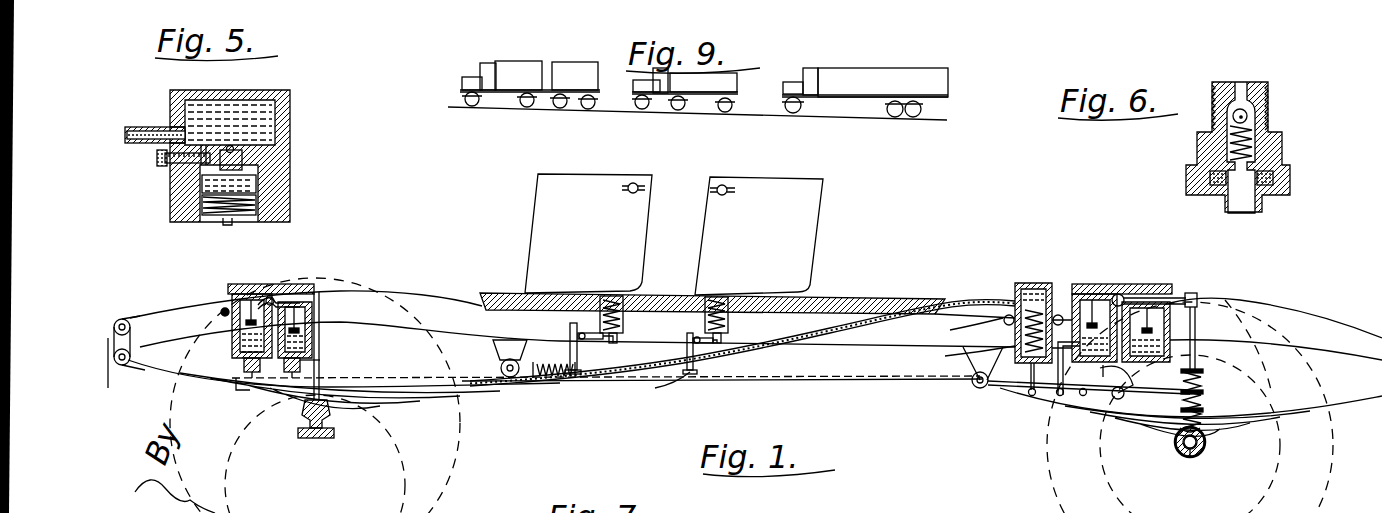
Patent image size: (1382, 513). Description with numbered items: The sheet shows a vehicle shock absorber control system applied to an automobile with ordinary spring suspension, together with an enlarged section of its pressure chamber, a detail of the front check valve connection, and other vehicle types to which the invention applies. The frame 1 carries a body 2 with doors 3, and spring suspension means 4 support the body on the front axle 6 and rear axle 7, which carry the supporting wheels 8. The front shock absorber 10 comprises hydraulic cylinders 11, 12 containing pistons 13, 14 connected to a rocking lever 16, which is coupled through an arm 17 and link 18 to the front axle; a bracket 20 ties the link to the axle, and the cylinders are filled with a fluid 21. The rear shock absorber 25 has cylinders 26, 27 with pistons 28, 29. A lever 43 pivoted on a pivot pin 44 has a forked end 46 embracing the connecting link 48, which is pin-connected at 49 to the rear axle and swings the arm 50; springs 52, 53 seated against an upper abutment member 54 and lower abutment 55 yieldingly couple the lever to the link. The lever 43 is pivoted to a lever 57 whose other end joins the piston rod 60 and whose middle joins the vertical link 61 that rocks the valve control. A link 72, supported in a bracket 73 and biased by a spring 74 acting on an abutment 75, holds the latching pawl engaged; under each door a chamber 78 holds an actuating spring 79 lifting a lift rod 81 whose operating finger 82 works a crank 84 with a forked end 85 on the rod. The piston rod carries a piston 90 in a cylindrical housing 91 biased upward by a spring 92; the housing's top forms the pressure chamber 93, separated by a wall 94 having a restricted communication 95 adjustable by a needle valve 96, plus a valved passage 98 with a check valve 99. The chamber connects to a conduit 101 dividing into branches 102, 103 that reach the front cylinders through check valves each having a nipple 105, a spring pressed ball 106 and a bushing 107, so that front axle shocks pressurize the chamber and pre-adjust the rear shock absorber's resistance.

In FIG. 1, the frame 1 is at (432, 295).
In FIG. 1, the body 2 is at (502, 293).
In FIG. 1, the doors 3 is at (540, 205).
In FIG. 1, the spring suspension means 4 is at (268, 405).
In FIG. 1, the front axle 6 is at (320, 432).
In FIG. 1, the rear axle 7 is at (1180, 452).
In FIG. 1, the supporting wheels 8 is at (466, 442).
In FIG. 1, the front shock absorber 10 is at (277, 364).
In FIG. 1, the hydraulic cylinder 11 is at (235, 336).
In FIG. 1, the hydraulic cylinder 12 is at (298, 318).
In FIG. 1, the piston 13 is at (222, 311).
In FIG. 1, the piston 14 is at (322, 298).
In FIG. 1, the rocking lever 16 is at (262, 284).
In FIG. 1, the arm 17 is at (305, 292).
In FIG. 1, the link 18 is at (322, 352).
In FIG. 1, the bracket 20 is at (330, 418).
In FIG. 1, the fluid 21 is at (242, 293).
In FIG. 1, the rear shock absorber 25 is at (1132, 300).
In FIG. 1, the cylinder 26 is at (1078, 365).
In FIG. 1, the cylinder 27 is at (1143, 395).
In FIG. 1, the piston 28 is at (1083, 290).
In FIG. 1, the piston 29 is at (1150, 310).
In FIG. 1, the lever 43 is at (1162, 392).
In FIG. 1, the pivot pin 44 is at (1133, 385).
In FIG. 1, the forked end 46 is at (1202, 392).
In FIG. 1, the connecting link 48 is at (1196, 332).
In FIG. 1, the pin connection 49 is at (1190, 458).
In FIG. 1, the arm 50 is at (1189, 293).
In FIG. 1, the spring 52 is at (1201, 380).
In FIG. 1, the spring 53 is at (1202, 410).
In FIG. 1, the upper abutment member 54 is at (1200, 368).
In FIG. 1, the lower abutment 55 is at (1200, 430).
In FIG. 1, the lever 57 is at (1062, 396).
In FIG. 1, the piston rod 60 is at (1010, 372).
In FIG. 1, the link 61 is at (1040, 396).
In FIG. 1, the link 72 is at (828, 380).
In FIG. 1, the bracket 73 is at (572, 376).
In FIG. 1, the spring 74 is at (560, 382).
In FIG. 1, the abutment 75 is at (553, 378).
In FIG. 1, the chamber 78 is at (703, 322).
In FIG. 1, the actuating spring 79 is at (705, 300).
In FIG. 1, the lift rod 81 is at (608, 342).
In FIG. 1, the operating finger 82 is at (592, 340).
In FIG. 1, the crank 84 is at (576, 328).
In FIG. 1, the forked end 85 is at (690, 375).
In FIG. 5, the piston 90 is at (262, 184).
In FIG. 1, the piston 90 is at (966, 328).
In FIG. 5, the cylindrical housing 91 is at (262, 205).
In FIG. 1, the cylindrical housing 91 is at (1009, 326).
In FIG. 5, the spring 92 is at (283, 203).
In FIG. 1, the spring 92 is at (967, 356).
In FIG. 5, the pressure chamber 93 is at (288, 102).
In FIG. 1, the pressure chamber 93 is at (1026, 283).
In FIG. 5, the wall 94 is at (250, 158).
In FIG. 5, the restricted communication 95 is at (162, 146).
In FIG. 5, the needle valve 96 is at (163, 168).
In FIG. 5, the valved passage 98 is at (227, 152).
In FIG. 5, the check valve 99 is at (268, 135).
In FIG. 5, the conduit 101 is at (156, 131).
In FIG. 1, the conduit 101 is at (915, 298).
In FIG. 1, the branch 102 is at (238, 381).
In FIG. 1, the branch 103 is at (300, 365).
In FIG. 6, the nipple 105 is at (1268, 96).
In FIG. 6, the spring pressed ball 106 is at (1250, 116).
In FIG. 6, the bushing 107 is at (1282, 147).
In FIG. 1, the bushing 107 is at (246, 364).